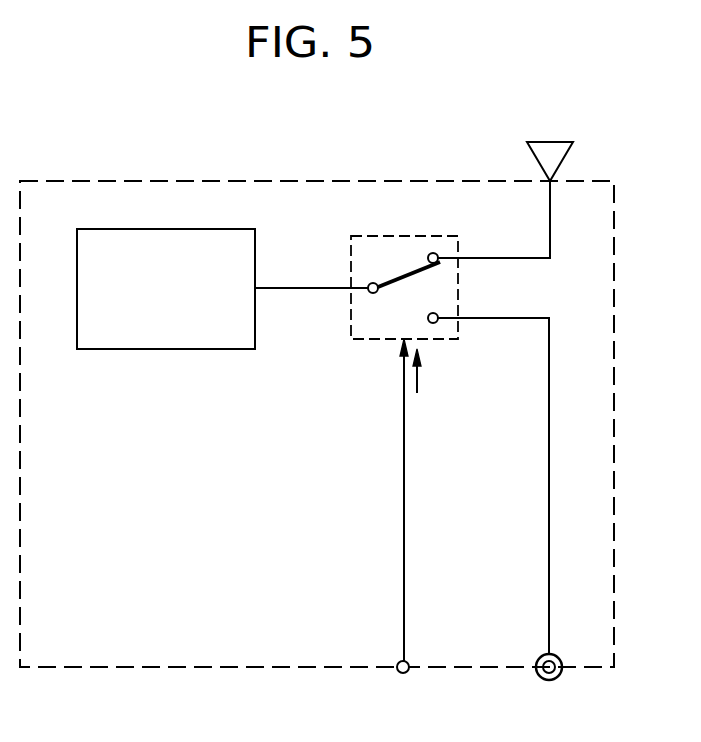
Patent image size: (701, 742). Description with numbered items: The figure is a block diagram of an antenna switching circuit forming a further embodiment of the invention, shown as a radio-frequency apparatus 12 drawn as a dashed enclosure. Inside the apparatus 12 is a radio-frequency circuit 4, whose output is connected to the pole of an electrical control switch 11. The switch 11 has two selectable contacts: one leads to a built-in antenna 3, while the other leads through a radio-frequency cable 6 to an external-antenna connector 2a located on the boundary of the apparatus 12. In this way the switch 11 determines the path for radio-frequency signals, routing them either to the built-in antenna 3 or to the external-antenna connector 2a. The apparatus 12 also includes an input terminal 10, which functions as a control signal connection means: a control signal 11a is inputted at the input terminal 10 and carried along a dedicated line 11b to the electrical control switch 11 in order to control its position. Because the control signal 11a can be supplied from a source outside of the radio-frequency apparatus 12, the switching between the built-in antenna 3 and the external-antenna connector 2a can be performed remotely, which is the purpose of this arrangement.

The radio-frequency apparatus 12 is at (165, 181).
The radio-frequency circuit 4 is at (117, 338).
The electrical control switch 11 is at (372, 340).
The built-in antenna 3 is at (563, 150).
The radio-frequency cable 6 is at (549, 467).
The external-antenna connector 2a is at (558, 679).
The dedicated line 11b is at (404, 467).
The control signal 11a is at (420, 380).
The input terminal 10 is at (398, 675).